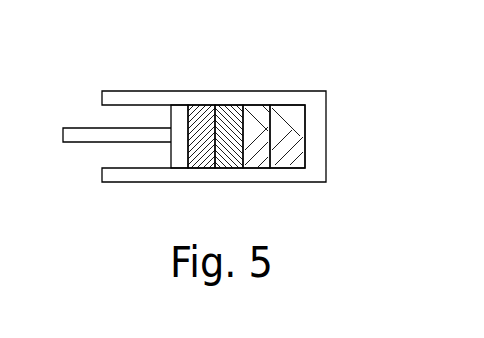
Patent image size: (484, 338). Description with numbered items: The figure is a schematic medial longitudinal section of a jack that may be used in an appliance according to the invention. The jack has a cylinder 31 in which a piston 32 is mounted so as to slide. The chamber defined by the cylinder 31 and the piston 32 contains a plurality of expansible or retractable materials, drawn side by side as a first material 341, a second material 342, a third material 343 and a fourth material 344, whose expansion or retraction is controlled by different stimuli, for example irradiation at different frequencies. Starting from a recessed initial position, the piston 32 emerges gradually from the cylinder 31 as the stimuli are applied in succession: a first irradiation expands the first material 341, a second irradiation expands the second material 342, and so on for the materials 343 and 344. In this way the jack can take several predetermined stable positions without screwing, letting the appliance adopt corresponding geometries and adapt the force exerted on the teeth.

The cylinder 31 is at (282, 89).
The piston 32 is at (79, 128).
The first expansible or retractable material 341 is at (199, 170).
The second expansible or retractable material 342 is at (234, 170).
The third expansible or retractable material 343 is at (252, 170).
The fourth expansible or retractable material 344 is at (293, 170).